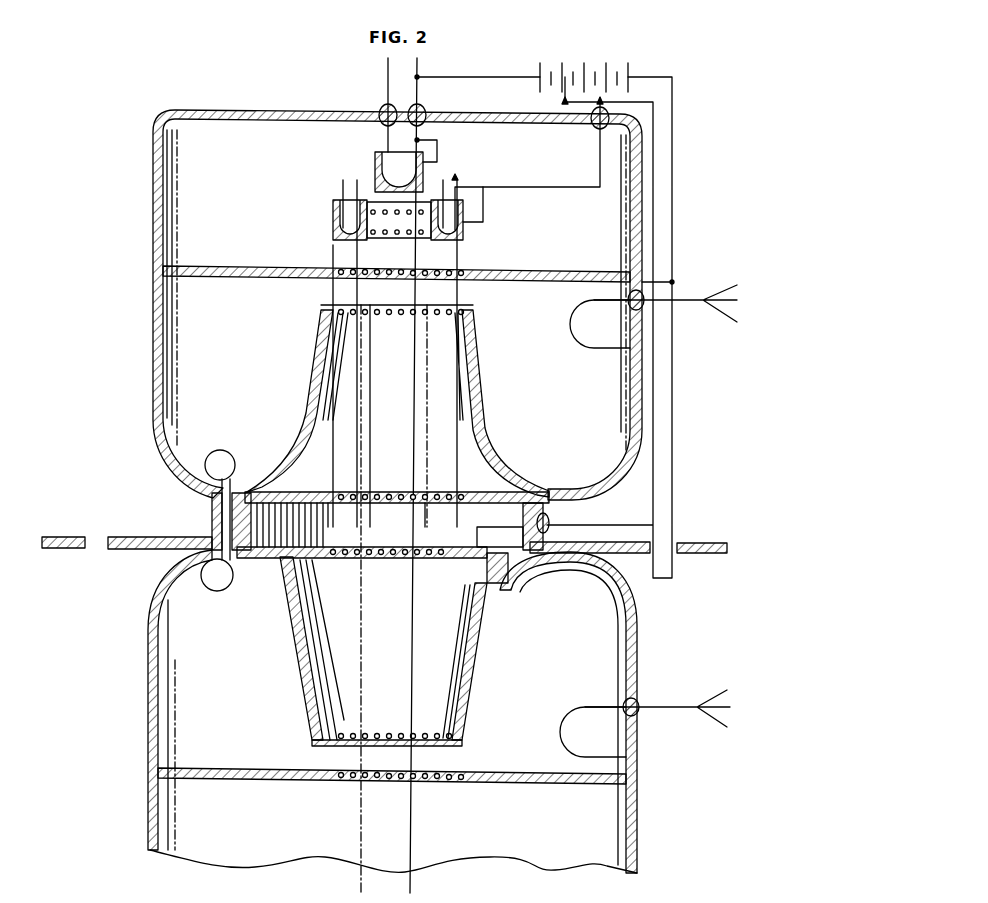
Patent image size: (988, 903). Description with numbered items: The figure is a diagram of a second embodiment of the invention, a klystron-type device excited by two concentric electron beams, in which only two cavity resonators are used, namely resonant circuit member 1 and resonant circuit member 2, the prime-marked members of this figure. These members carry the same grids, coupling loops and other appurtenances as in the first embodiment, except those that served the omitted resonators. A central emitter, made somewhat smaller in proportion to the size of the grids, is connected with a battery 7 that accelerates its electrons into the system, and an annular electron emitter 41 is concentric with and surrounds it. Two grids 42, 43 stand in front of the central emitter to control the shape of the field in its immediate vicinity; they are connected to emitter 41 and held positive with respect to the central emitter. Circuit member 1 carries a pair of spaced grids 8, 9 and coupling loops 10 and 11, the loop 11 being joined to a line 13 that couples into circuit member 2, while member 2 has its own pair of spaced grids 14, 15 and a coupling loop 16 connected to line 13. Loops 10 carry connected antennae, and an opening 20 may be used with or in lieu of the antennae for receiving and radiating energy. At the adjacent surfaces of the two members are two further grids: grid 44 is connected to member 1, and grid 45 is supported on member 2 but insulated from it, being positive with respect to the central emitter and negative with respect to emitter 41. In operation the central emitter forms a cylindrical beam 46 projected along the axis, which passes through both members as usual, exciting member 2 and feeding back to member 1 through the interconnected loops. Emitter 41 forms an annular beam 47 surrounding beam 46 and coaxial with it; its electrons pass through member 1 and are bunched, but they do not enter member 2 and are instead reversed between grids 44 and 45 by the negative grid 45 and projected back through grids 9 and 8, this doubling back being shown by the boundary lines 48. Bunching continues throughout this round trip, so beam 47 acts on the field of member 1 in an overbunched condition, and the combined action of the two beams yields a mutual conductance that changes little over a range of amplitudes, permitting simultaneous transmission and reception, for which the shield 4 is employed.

The resonant circuit member 1 is at (153, 324).
The resonant circuit member 2 is at (166, 587).
The shield 4 is at (120, 536).
The battery 7 is at (588, 72).
The grid 8 is at (438, 278).
The grid 9 is at (346, 306).
The coupling loop 10 is at (572, 313).
The coupling loop 11 is at (237, 450).
The line 13 is at (212, 525).
The grid 14 is at (435, 746).
The grid 15 is at (345, 771).
The coupling loop 16 is at (232, 579).
The opening 20 is at (218, 270).
The electron emitter 41 is at (343, 238).
The grid 42 is at (387, 216).
The grid 43 is at (417, 233).
The grid 44 is at (430, 503).
The grid 45 is at (420, 559).
The cylindrical beam 46 is at (452, 484).
The annular beam 47 is at (333, 253).
The boundary lines 48 is at (330, 481).